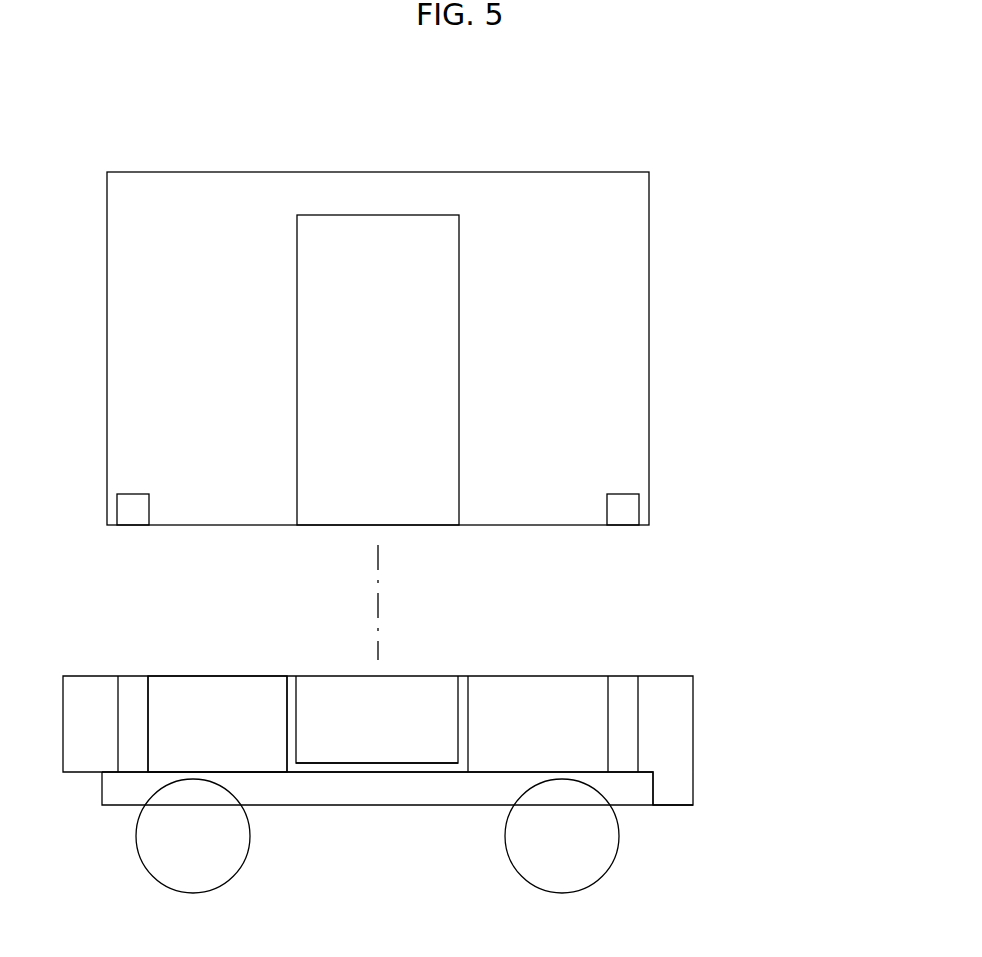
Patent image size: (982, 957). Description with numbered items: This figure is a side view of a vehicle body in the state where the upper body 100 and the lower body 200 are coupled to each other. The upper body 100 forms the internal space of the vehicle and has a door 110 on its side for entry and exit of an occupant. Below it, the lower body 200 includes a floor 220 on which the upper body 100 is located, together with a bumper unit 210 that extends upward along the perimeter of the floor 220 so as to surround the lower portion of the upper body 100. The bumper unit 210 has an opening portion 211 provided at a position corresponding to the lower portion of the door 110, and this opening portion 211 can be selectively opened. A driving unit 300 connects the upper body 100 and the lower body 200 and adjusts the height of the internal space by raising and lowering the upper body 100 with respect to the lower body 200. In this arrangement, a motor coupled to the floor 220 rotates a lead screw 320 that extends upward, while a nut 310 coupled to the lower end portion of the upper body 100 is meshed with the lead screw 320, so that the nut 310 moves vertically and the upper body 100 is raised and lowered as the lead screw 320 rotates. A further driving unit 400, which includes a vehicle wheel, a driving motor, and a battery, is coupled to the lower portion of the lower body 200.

The upper body 100 is at (266, 170).
The door 110 is at (396, 240).
The lower body 200 is at (180, 676).
The bumper unit 210 is at (248, 695).
The opening portion 211 is at (415, 695).
The floor 220 is at (372, 768).
The driving unit 300 is at (783, 512).
The nut 310 is at (628, 508).
The lead screw 320 is at (624, 686).
The driving unit 400 is at (294, 803).